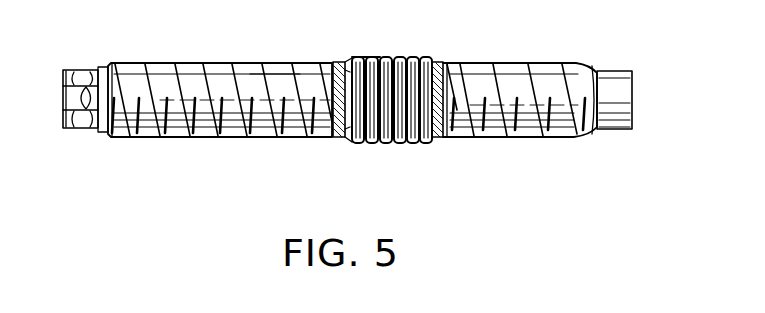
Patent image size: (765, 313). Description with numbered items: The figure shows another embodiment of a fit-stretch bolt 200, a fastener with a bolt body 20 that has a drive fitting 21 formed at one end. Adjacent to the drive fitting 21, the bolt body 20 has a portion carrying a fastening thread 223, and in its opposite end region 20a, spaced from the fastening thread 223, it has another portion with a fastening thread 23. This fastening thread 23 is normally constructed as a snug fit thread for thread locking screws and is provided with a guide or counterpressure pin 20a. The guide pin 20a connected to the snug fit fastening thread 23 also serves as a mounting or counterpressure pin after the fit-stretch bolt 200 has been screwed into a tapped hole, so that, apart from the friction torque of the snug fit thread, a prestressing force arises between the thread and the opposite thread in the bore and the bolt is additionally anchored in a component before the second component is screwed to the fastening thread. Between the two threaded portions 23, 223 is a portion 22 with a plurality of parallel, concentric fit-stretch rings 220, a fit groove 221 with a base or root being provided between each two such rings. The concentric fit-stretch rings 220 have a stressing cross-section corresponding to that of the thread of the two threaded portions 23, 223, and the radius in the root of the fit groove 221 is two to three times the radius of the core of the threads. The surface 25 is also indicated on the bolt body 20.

The bolt body 20 is at (298, 138).
The guide or counterpressure pin 20a is at (612, 78).
The drive fitting 21 is at (71, 72).
The portion with fit-stretch rings 22 is at (399, 148).
The fastening thread 23 is at (542, 137).
The body surface 25 is at (273, 83).
The fit-stretch bolt 200 is at (215, 139).
The fit-stretch rings 220 is at (377, 55).
The fit groove 221 is at (363, 140).
The fastening thread 223 is at (135, 63).